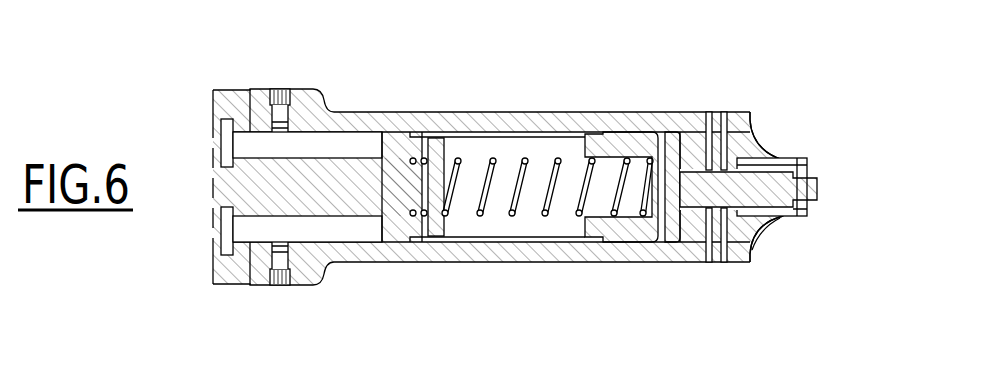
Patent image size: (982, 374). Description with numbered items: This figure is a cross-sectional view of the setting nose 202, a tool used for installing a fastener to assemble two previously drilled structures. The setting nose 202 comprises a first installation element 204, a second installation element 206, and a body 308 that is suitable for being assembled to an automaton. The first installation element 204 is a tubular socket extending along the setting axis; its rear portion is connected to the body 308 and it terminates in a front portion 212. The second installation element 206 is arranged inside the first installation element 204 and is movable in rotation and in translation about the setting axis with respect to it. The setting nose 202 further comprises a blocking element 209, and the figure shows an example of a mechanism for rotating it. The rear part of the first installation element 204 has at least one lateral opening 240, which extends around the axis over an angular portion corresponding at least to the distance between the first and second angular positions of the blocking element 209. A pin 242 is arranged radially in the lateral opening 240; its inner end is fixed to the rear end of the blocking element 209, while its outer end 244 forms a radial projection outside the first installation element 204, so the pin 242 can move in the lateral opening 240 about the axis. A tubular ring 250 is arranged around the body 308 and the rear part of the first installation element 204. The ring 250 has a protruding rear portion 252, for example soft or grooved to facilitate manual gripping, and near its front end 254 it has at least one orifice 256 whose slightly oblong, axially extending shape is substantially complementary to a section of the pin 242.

The setting nose 202 is at (445, 228).
The first installation element 204 is at (765, 152).
The second installation element 206 is at (805, 212).
The blocking element 209 is at (748, 246).
The front portion 212 is at (805, 165).
The lateral opening 240 is at (711, 258).
The pin 242 is at (722, 258).
The outer end 244 is at (722, 112).
The tubular ring 250 is at (377, 104).
The protruding rear portion 252 is at (302, 88).
The front end 254 is at (750, 112).
The orifice 256 is at (709, 112).
The body 308 is at (484, 130).